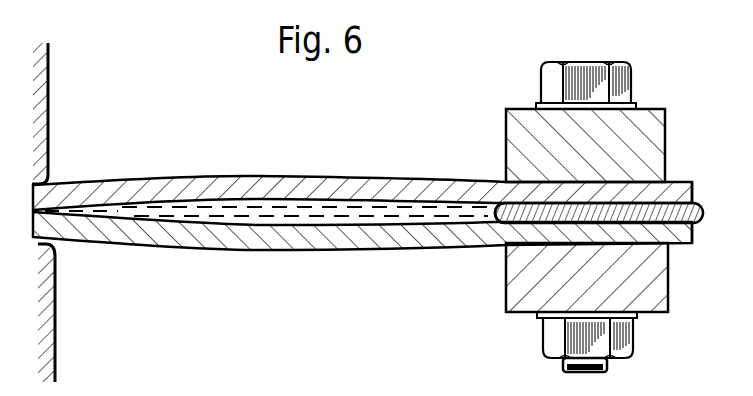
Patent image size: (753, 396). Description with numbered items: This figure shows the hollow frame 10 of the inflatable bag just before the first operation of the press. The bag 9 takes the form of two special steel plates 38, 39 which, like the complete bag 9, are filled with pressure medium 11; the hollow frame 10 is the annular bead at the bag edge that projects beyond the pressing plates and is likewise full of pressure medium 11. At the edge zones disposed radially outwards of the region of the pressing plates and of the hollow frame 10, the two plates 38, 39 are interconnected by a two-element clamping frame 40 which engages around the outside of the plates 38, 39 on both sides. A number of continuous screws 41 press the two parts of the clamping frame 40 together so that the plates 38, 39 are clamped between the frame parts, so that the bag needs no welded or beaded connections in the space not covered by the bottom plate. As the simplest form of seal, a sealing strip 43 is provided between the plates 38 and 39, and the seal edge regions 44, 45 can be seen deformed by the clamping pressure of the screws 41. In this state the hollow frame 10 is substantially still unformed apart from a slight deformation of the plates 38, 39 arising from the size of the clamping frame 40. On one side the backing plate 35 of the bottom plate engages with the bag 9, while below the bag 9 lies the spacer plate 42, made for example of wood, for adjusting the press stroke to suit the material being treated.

The bag 9 is at (363, 194).
The hollow frame 10 is at (263, 181).
The pressure medium 11 is at (315, 206).
The backing plate 35 is at (49, 74).
The special steel plate 38 is at (660, 236).
The special steel plate 39 is at (672, 193).
The clamping frame 40 is at (527, 118).
The screws 41 is at (593, 70).
The spacer plate 42 is at (52, 325).
The sealing strip 43 is at (503, 246).
The seal edge region 44 is at (499, 200).
The seal edge region 45 is at (697, 224).